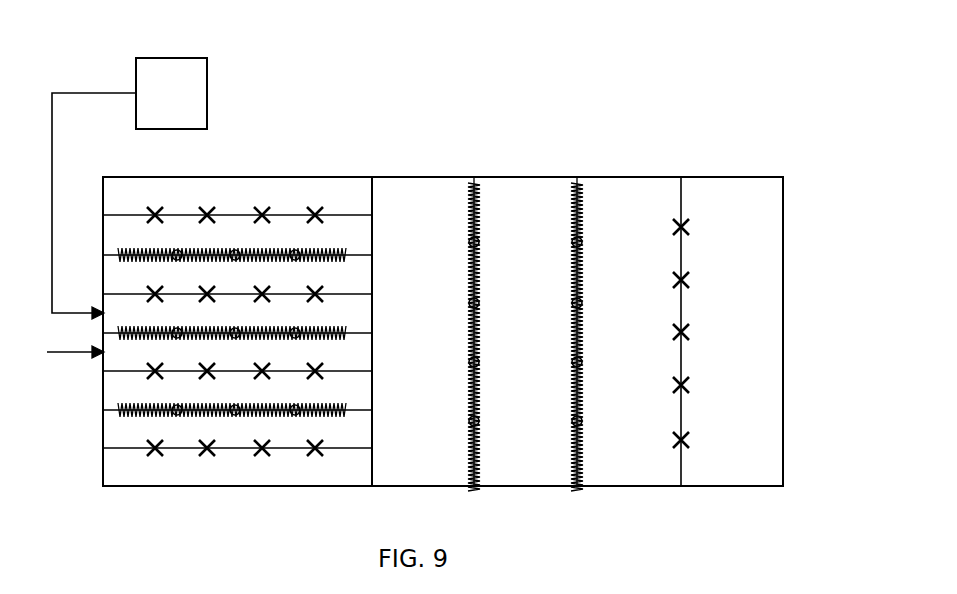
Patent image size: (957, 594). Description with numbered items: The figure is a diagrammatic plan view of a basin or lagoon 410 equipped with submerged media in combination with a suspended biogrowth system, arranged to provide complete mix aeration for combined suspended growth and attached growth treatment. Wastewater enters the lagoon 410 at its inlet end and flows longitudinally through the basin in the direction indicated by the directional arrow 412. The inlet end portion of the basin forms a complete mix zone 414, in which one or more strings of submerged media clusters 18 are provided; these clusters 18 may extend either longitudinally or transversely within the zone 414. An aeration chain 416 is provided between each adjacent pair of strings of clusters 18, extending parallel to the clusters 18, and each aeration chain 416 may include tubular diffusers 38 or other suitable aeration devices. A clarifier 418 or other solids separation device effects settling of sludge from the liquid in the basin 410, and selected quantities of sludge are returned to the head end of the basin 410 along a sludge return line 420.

The lagoon 410 is at (784, 292).
The directional arrow 412 is at (70, 353).
The complete mix zone 414 is at (273, 487).
The aeration chain 416 is at (338, 215).
The clarifier 418 is at (205, 92).
The sludge return line 420 is at (92, 93).
The tubular diffusers 38 is at (155, 207).
The submerged media clusters 18 is at (345, 250).